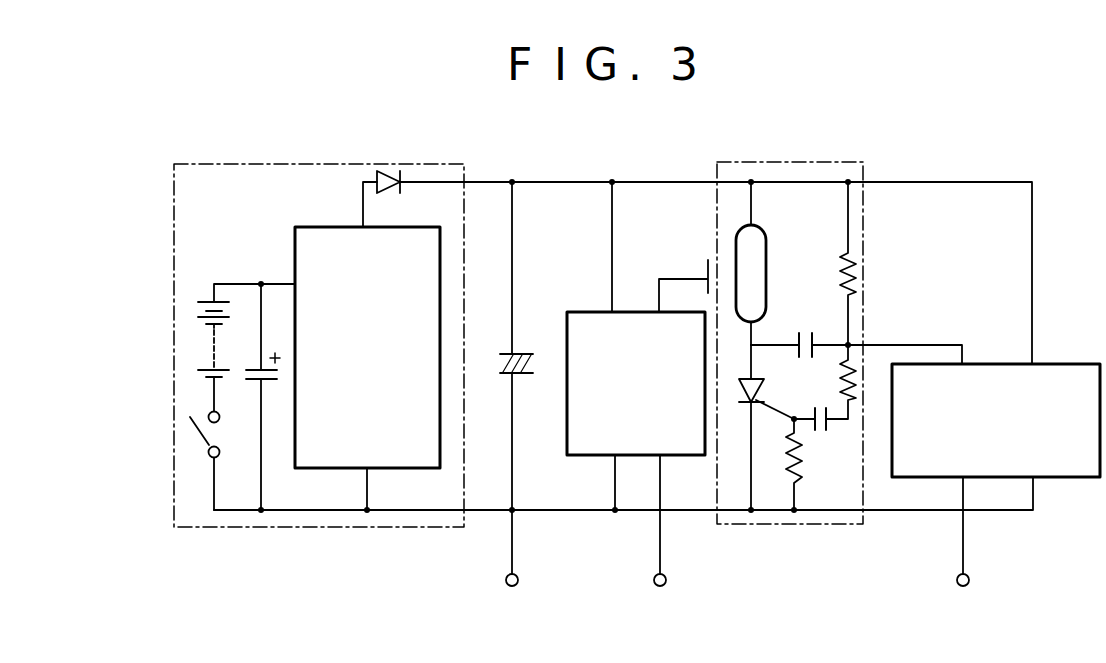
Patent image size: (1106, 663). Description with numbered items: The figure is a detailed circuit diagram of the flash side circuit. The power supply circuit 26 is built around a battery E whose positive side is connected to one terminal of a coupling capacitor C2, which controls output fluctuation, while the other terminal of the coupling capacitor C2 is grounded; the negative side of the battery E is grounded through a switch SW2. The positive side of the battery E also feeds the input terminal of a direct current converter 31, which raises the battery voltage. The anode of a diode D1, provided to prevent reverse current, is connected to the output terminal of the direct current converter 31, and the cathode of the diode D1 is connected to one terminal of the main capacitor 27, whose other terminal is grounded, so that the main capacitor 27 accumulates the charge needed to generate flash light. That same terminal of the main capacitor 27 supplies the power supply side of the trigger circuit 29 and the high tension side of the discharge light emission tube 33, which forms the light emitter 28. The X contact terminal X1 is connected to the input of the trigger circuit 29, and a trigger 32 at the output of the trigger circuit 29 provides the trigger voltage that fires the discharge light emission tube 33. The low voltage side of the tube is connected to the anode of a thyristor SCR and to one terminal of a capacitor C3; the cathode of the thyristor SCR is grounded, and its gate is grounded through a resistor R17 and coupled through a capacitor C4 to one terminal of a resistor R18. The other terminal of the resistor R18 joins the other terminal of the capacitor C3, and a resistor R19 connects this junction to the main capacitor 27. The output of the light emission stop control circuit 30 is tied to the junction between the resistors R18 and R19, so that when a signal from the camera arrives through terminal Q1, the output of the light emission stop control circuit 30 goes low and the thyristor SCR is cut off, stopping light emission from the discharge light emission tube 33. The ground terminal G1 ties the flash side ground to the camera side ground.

The power supply circuit 26 is at (320, 164).
The main capacitor 27 is at (516, 353).
The light emitter 28 is at (770, 162).
The trigger circuit 29 is at (587, 311).
The light emission stop control circuit 30 is at (1066, 364).
The direct current converter 31 is at (395, 227).
The trigger 32 is at (706, 275).
The discharge light emission tube 33 is at (768, 253).
The diode D1 is at (384, 172).
The battery E is at (208, 352).
The switch SW2 is at (204, 441).
The coupling capacitor C2 is at (258, 383).
The capacitor C3 is at (805, 330).
The capacitor C4 is at (818, 433).
The resistor R17 is at (796, 481).
The resistor R18 is at (840, 373).
The resistor R19 is at (860, 283).
The thyristor SCR is at (745, 399).
The ground terminal G1 is at (530, 582).
The X contact terminal X1 is at (676, 582).
The terminal Q1 is at (979, 582).